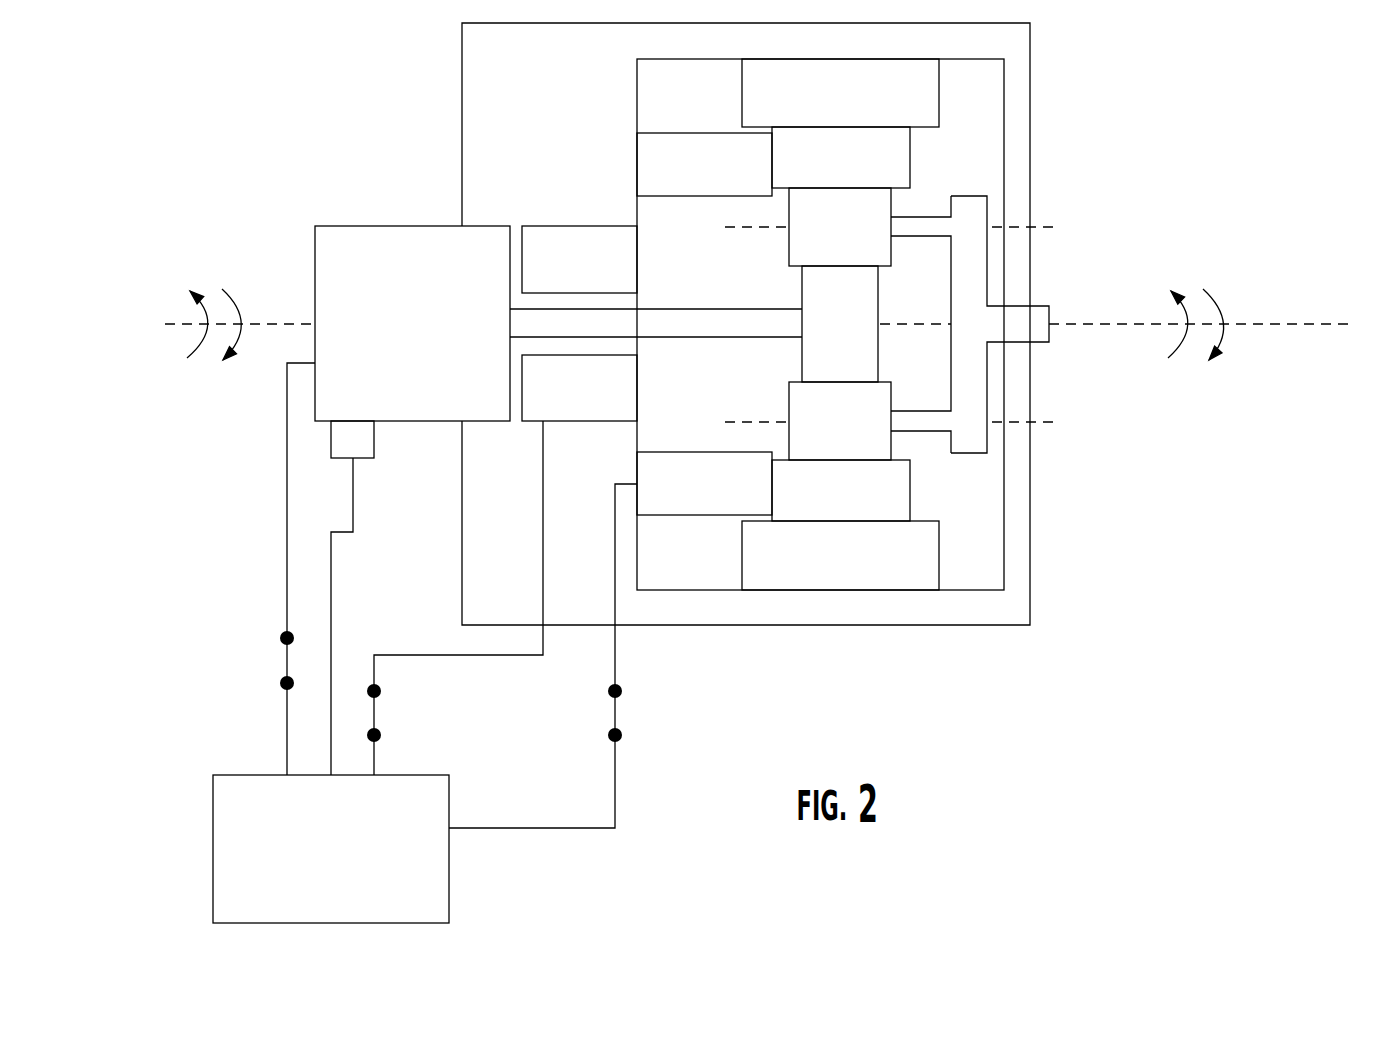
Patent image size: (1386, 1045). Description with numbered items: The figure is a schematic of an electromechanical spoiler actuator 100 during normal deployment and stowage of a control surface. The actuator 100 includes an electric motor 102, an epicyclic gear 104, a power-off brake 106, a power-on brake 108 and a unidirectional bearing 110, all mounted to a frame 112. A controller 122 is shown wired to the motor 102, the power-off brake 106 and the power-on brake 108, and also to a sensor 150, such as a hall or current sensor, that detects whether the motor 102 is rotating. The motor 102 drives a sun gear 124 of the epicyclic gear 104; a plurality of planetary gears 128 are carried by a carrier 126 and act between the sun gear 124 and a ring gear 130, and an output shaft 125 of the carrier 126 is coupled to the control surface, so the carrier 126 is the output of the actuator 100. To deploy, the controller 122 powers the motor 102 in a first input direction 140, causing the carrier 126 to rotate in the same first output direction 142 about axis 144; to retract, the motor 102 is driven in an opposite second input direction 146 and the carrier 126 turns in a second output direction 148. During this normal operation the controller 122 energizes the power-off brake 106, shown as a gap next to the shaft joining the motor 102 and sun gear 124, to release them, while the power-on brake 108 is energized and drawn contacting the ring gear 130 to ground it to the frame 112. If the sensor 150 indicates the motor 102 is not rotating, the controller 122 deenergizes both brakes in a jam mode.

The electromechanical spoiler actuator 100 is at (1068, 700).
The electric motor 102 is at (412, 323).
The epicyclic gear 104 is at (1070, 121).
The power-off brake 106 is at (579, 323).
The power-on brake 108 is at (704, 324).
The unidirectional bearing 110 is at (840, 324).
The frame 112 is at (693, 660).
The controller 122 is at (331, 849).
The sun gear 124 is at (840, 324).
The output shaft 125 is at (1068, 287).
The carrier 126 is at (1058, 248).
The planetary gears 128 is at (840, 324).
The ring gear 130 is at (841, 324).
The first input direction 140 is at (238, 300).
The first output direction 142 is at (1237, 268).
The axis 144 is at (1332, 367).
The second input direction 146 is at (212, 384).
The second output direction 148 is at (1193, 384).
The sensor 150 is at (400, 473).